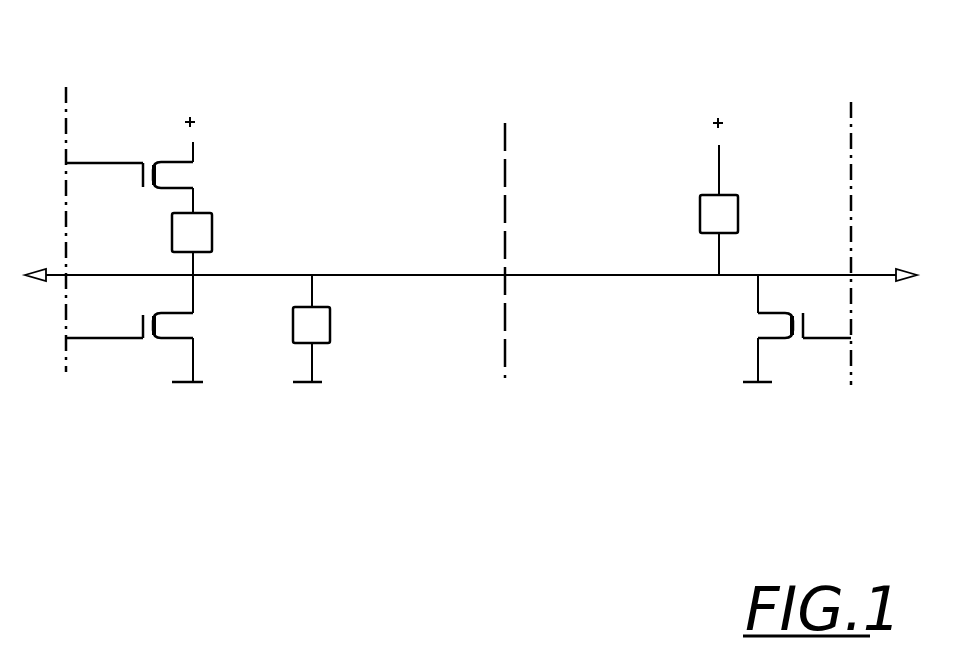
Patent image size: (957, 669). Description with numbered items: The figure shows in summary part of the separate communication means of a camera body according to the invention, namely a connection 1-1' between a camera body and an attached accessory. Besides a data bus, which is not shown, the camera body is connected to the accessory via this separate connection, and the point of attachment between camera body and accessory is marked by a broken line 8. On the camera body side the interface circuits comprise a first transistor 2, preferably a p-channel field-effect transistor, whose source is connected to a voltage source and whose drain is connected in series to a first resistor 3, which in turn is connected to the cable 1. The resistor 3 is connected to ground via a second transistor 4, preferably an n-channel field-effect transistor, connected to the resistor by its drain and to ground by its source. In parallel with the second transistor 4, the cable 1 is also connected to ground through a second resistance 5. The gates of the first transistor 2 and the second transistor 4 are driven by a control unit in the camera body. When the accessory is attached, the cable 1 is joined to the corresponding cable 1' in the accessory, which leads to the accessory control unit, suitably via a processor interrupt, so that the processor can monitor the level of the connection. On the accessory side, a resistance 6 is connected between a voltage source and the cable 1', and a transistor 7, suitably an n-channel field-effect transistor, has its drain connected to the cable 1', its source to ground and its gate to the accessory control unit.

The separate cable 1 is at (265, 180).
The separate cable in the accessory 1' is at (711, 375).
The first transistor 2 is at (173, 177).
The first resistor 3 is at (218, 232).
The second transistor 4 is at (184, 327).
The second resistance 5 is at (338, 328).
The resistance 6 is at (694, 217).
The transistor 7 is at (769, 327).
The broken line 8 is at (500, 271).